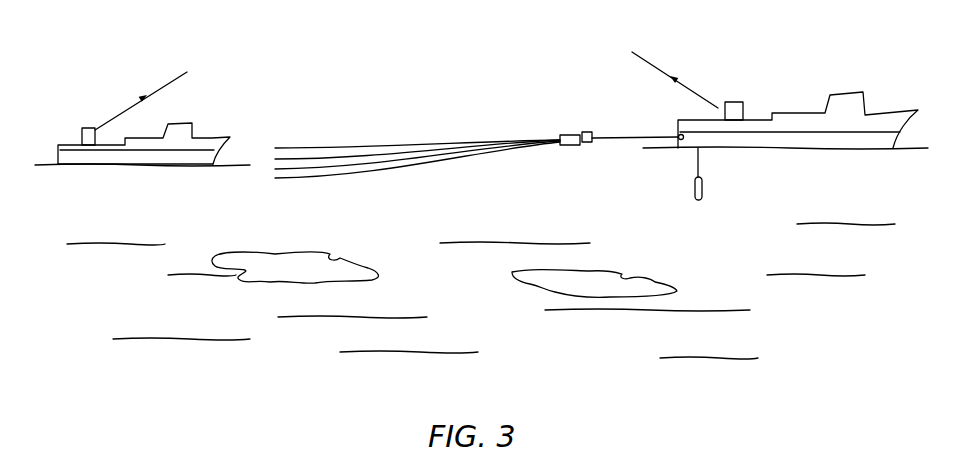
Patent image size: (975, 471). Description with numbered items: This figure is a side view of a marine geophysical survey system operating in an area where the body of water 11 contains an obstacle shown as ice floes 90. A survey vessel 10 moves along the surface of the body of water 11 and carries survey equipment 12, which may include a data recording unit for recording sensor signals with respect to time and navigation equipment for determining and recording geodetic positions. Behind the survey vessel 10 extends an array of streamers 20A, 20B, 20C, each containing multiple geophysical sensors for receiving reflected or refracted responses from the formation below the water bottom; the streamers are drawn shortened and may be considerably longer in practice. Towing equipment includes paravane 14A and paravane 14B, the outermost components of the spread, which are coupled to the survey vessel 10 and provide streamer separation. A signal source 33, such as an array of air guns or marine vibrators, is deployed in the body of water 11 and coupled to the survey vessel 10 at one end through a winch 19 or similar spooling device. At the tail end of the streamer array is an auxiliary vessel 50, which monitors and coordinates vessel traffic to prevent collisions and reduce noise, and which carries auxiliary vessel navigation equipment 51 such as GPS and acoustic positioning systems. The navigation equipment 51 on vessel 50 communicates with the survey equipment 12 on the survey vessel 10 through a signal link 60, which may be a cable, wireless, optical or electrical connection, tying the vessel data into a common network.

The survey vessel 10 is at (886, 114).
The body of water 11 is at (832, 331).
The survey equipment 12 is at (735, 101).
The paravane 14A is at (583, 131).
The paravane 14B is at (571, 146).
The winch 19 is at (680, 148).
The streamer 20A is at (303, 147).
The streamer 20B is at (344, 158).
The streamer 20C is at (300, 170).
The signal source 33 is at (699, 200).
The vessel 50 is at (133, 164).
The auxiliary vessel navigation equipment 51 is at (88, 127).
The signal link 60 is at (135, 97).
The ice floes 90 is at (245, 255).